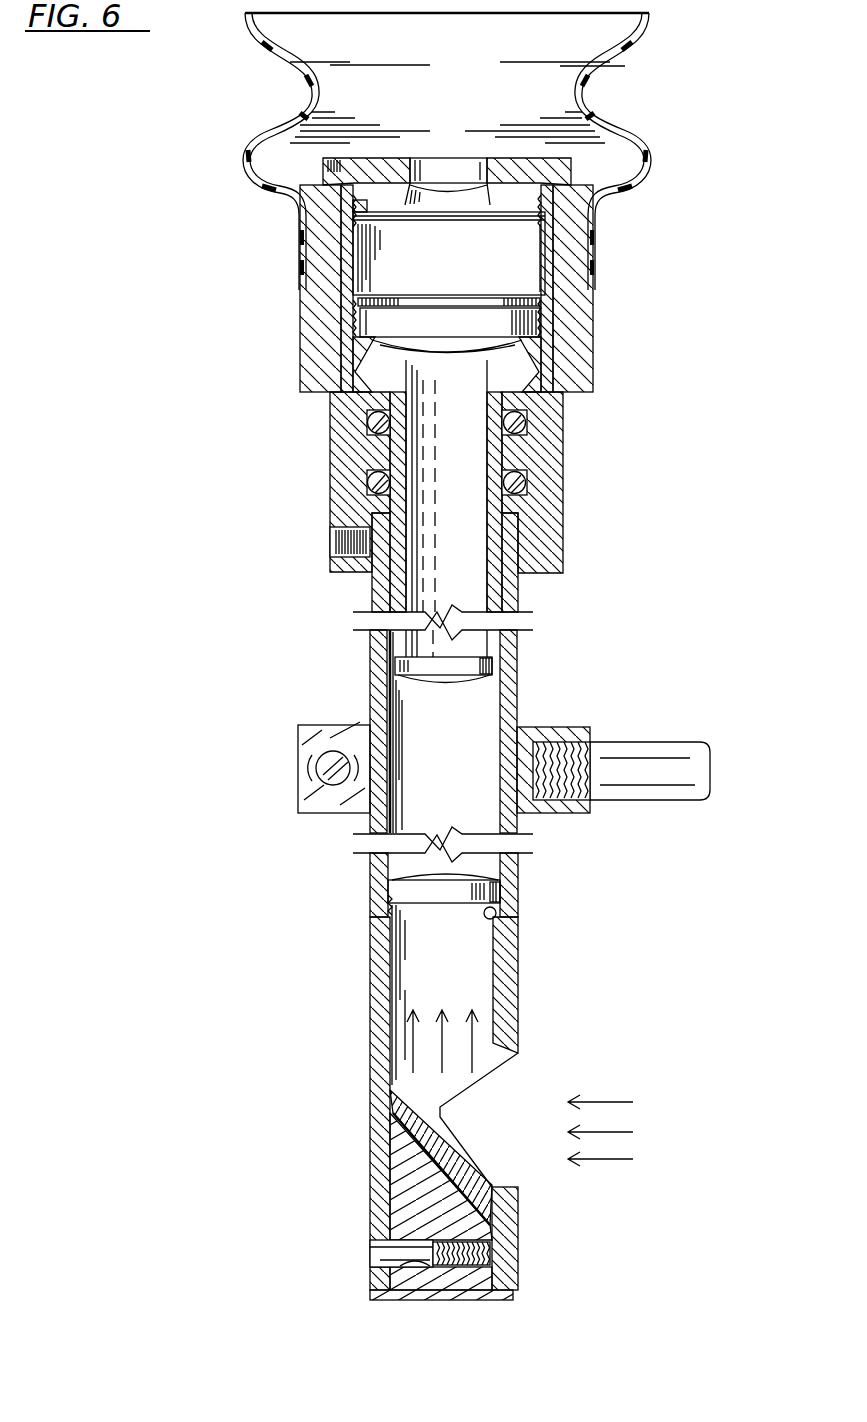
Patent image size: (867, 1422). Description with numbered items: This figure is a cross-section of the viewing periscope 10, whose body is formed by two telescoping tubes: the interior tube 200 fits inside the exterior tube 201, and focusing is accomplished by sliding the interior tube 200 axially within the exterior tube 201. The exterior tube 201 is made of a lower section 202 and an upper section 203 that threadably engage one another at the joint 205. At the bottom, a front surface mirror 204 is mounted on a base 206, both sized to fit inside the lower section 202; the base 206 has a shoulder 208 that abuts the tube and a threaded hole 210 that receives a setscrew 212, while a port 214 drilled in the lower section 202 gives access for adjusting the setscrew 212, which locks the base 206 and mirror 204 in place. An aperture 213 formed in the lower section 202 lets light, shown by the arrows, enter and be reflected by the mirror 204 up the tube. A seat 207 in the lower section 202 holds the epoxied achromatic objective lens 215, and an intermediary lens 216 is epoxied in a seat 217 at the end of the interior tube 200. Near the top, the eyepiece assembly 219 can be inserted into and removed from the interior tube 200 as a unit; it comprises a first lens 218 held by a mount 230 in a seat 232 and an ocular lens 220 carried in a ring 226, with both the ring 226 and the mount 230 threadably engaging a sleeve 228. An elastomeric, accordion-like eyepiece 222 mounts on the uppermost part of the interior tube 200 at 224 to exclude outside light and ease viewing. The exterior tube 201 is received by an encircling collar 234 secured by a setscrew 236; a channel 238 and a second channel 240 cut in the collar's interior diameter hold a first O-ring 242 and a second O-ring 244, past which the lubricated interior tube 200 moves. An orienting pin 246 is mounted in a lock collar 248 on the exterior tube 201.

The viewing periscope 10 is at (167, 656).
The interior tube 200 is at (320, 372).
The exterior tube 201 is at (330, 709).
The lower section 202 is at (380, 978).
The upper section 203 is at (380, 604).
The front surface mirror 204 is at (405, 1104).
The joint 205 is at (505, 897).
The base 206 is at (400, 1174).
The seat 207 is at (496, 919).
The shoulder 208 is at (376, 1298).
The hole 210 is at (415, 1268).
The setscrew 212 is at (470, 1268).
The aperture 213 is at (500, 1050).
The port 214 is at (385, 1262).
The objective lens 215 is at (400, 895).
The intermediary lens 216 is at (408, 663).
The seat 217 is at (492, 662).
The first lens 218 is at (372, 324).
The eyepiece assembly 219 is at (582, 257).
The ocular lens 220 is at (447, 178).
The accordion-like eyepiece 222 is at (600, 99).
The mounting location 224 is at (583, 356).
The ring 226 is at (612, 184).
The sleeve 228 is at (345, 232).
The mount 230 is at (560, 381).
The seat 232 is at (545, 300).
The encircling collar 234 is at (555, 540).
The setscrew 236 is at (334, 548).
The channel 238 is at (346, 434).
The second channel 240 is at (362, 492).
The first O-ring 242 is at (527, 414).
The second O-ring 244 is at (528, 485).
The orienting pin 246 is at (700, 778).
The lock collar 248 is at (304, 795).